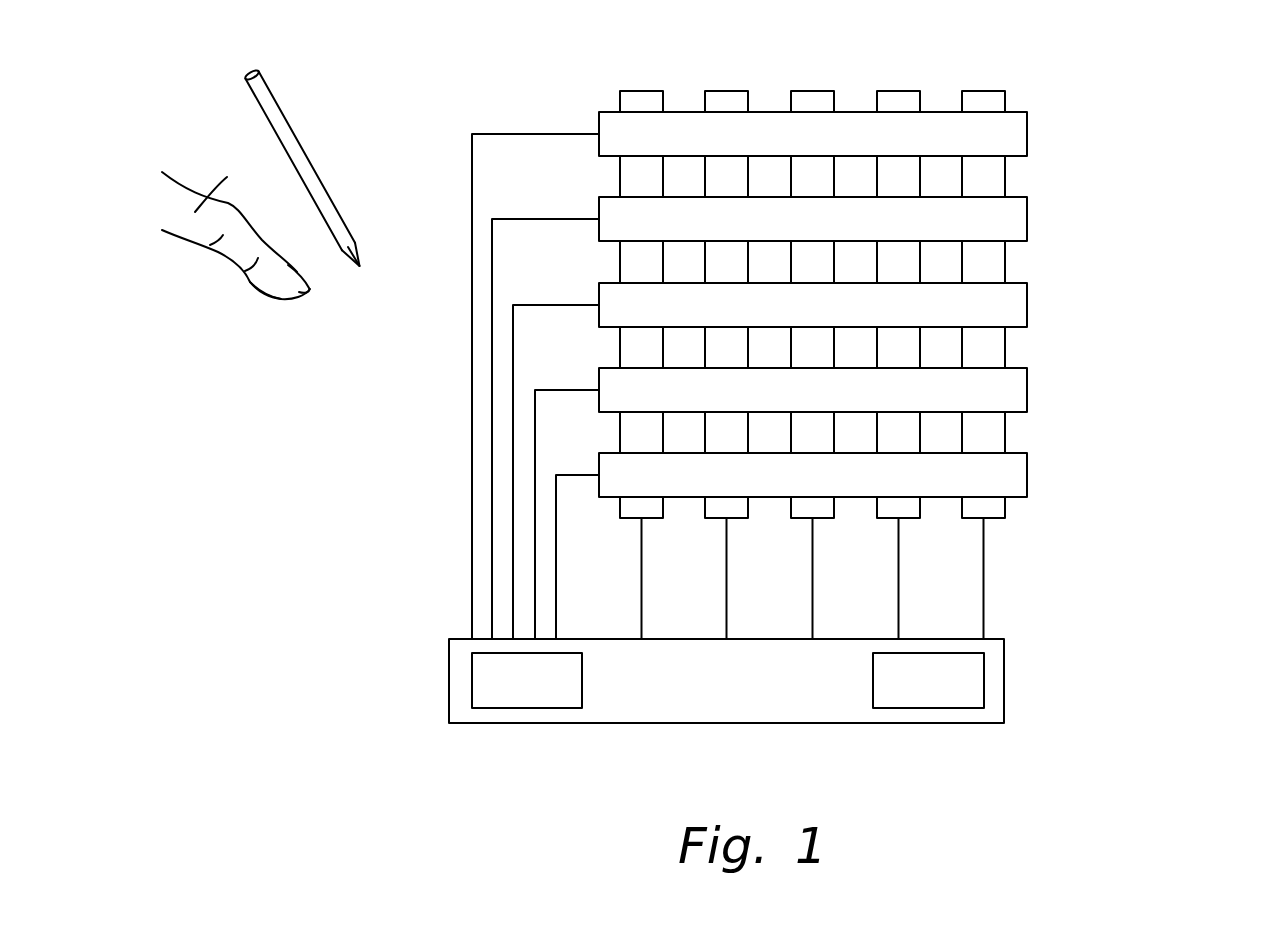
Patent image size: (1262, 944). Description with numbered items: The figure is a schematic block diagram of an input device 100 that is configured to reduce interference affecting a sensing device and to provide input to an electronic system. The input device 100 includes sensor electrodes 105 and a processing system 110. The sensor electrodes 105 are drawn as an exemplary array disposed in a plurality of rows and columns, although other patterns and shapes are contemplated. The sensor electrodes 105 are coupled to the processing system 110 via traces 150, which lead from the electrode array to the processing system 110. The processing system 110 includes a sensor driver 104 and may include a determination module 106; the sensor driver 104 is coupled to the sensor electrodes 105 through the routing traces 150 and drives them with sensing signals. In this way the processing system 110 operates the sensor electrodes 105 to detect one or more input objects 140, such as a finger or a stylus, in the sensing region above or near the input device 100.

The input device 100 is at (1142, 50).
The sensor driver 104 is at (550, 693).
The sensor electrodes 105 is at (983, 91).
The determination module 106 is at (952, 694).
The processing system 110 is at (768, 681).
The input objects 140 is at (292, 146).
The traces 150 is at (472, 578).